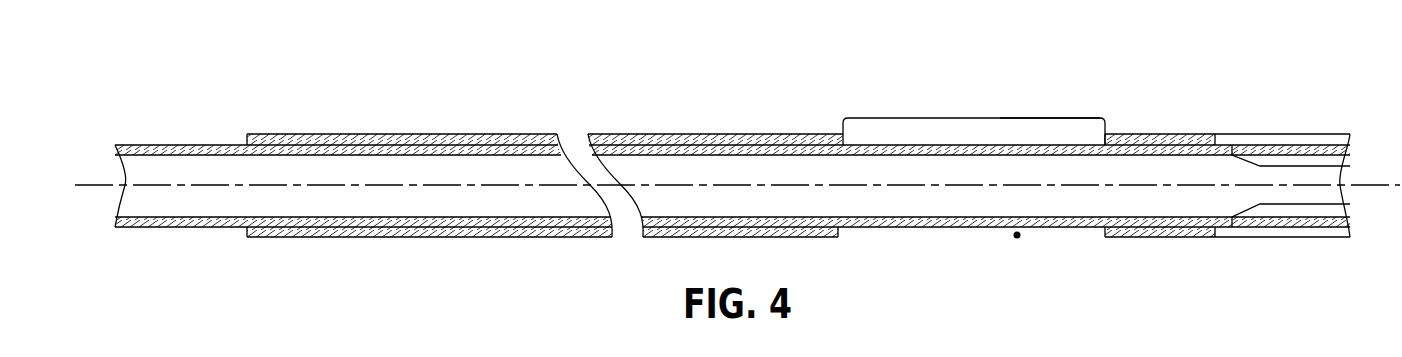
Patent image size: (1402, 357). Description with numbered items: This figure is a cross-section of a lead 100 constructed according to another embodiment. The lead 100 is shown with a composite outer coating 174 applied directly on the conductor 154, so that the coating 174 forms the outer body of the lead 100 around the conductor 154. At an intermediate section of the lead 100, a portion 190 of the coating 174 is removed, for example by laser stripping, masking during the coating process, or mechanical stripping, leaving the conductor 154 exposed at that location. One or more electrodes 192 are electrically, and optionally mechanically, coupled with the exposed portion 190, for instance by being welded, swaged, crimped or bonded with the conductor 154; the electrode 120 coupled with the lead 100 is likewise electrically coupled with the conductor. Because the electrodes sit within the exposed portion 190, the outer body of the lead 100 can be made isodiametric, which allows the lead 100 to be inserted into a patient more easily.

The lead 100 is at (360, 90).
The electrode 120 is at (1040, 118).
The conductor 154 is at (912, 227).
The composite outer coating 174 is at (700, 133).
The exposed portion 190 is at (1020, 238).
The electrode 192 is at (912, 118).